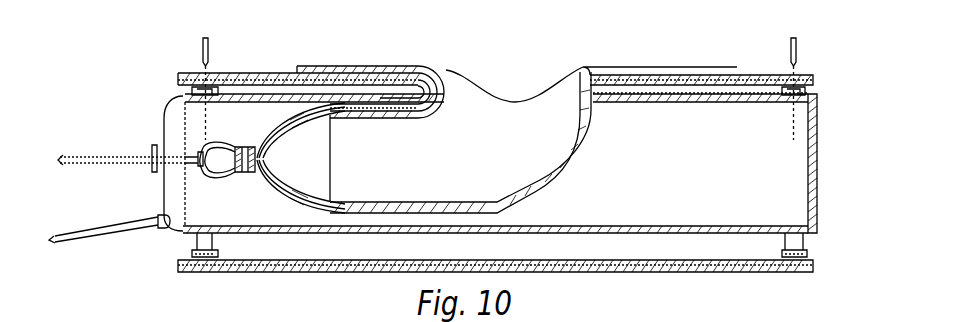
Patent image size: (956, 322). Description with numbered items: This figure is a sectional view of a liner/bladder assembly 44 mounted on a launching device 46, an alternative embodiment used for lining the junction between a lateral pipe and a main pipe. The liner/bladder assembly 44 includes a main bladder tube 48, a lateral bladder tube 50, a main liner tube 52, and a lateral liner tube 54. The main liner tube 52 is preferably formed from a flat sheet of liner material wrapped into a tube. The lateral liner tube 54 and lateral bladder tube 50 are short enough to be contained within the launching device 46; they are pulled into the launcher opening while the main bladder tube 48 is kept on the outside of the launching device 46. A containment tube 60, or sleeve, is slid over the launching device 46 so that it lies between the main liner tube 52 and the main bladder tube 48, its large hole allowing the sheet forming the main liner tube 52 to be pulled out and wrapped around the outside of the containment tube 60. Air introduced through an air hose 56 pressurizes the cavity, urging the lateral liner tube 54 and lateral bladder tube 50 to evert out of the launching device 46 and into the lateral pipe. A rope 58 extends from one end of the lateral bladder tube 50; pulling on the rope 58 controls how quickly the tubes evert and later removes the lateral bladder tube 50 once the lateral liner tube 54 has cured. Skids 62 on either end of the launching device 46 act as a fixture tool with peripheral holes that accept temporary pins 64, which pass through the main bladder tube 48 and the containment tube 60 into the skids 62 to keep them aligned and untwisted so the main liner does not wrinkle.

The liner/bladder assembly 44 is at (247, 58).
The launching device 46 is at (736, 72).
The main bladder tube 48 is at (324, 53).
The lateral bladder tube 50 is at (413, 110).
The main liner tube 52 is at (397, 68).
The lateral liner tube 54 is at (570, 143).
The air hose 56 is at (120, 237).
The rope 58 is at (118, 164).
The containment tube 60 is at (765, 72).
The skids 62 is at (192, 90).
The temporary pins 64 is at (200, 42).